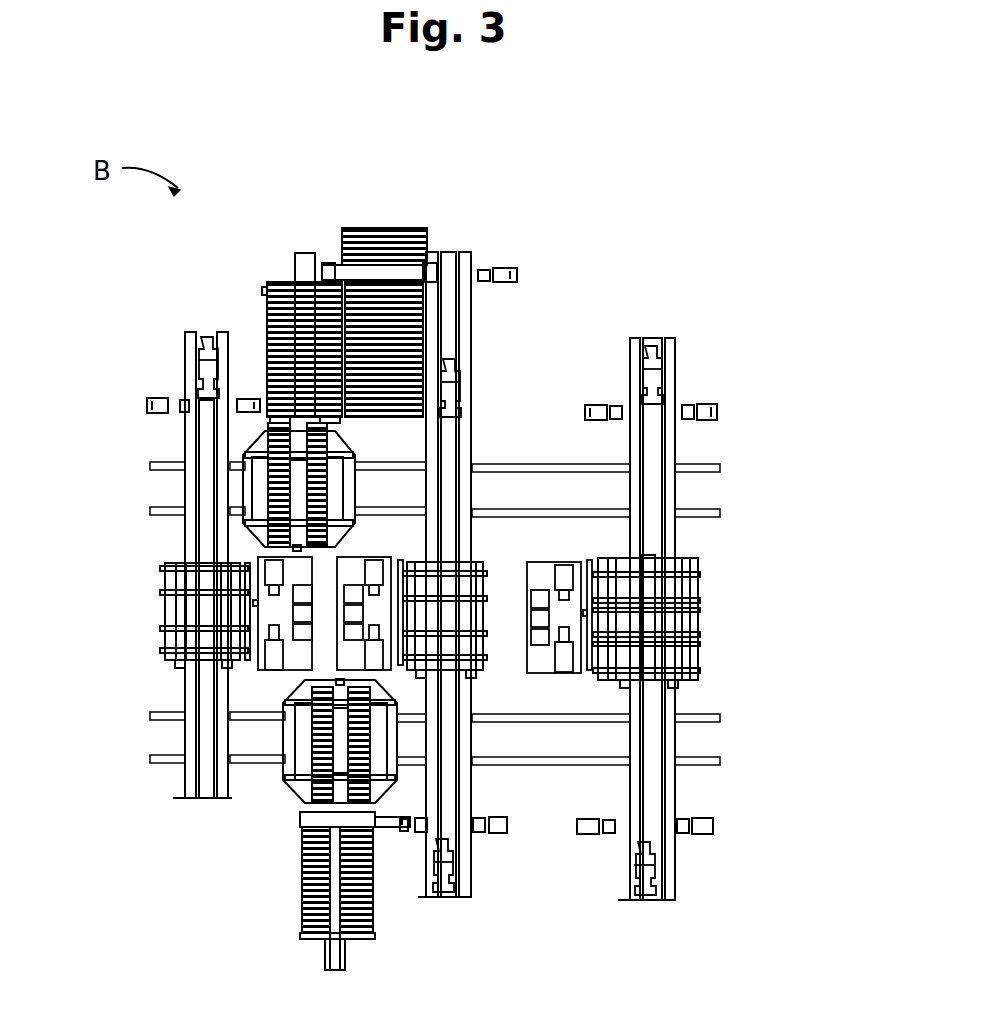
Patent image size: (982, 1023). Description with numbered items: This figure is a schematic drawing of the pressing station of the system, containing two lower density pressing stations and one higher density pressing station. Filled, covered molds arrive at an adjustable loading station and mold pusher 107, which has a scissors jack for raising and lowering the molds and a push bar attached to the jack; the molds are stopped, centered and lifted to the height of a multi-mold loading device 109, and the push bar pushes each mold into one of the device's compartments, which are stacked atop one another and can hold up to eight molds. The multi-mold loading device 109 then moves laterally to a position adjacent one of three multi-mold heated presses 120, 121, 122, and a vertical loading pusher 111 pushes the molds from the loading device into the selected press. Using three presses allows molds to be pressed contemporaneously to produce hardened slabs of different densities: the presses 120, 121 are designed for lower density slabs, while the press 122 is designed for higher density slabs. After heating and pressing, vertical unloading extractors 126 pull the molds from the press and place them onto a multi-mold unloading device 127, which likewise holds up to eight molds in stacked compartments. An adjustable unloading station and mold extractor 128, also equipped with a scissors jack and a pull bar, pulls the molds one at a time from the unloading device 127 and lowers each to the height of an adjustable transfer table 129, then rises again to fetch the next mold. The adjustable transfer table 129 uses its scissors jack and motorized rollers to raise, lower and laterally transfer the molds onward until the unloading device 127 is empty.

The adjustable loading station and mold pusher 107 is at (300, 923).
The multi-mold loading device 109 is at (305, 752).
The vertical loading pusher 111 is at (452, 867).
The multi-mold heated press 120 is at (220, 620).
The multi-mold heated press 121 is at (448, 603).
The multi-mold heated press 122 is at (690, 580).
The vertical unloading extractor 126 is at (202, 372).
The multi-mold unloading device 127 is at (262, 478).
The adjustable unloading station and mold extractor 128 is at (265, 295).
The adjustable transfer table 129 is at (400, 328).